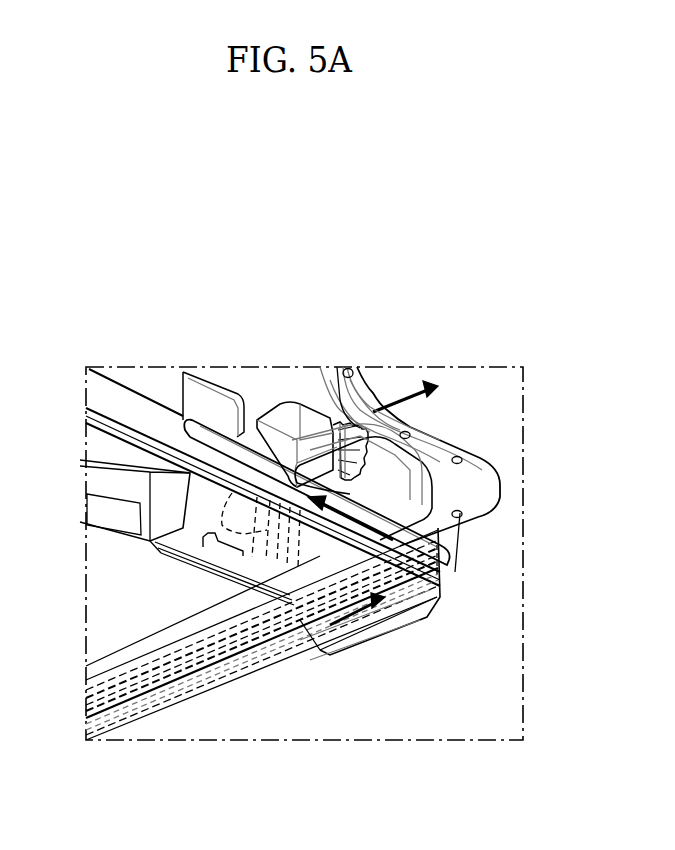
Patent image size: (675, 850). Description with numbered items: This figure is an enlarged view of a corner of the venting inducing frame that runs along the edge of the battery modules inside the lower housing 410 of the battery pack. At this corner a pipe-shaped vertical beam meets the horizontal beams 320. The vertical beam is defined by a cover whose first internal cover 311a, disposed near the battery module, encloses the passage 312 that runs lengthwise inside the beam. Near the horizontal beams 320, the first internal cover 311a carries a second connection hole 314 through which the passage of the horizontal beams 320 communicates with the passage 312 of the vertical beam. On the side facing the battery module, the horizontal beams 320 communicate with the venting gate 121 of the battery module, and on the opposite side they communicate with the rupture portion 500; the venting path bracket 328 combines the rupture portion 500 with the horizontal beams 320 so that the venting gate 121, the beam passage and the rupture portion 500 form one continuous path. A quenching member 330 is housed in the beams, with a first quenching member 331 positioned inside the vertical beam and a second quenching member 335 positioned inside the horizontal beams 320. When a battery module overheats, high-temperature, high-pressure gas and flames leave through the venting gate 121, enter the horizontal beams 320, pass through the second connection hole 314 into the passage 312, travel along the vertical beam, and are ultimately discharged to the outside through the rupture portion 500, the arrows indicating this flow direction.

The venting gate 121 is at (95, 441).
The passage 312 is at (150, 716).
The second connection hole 314 is at (450, 600).
The first internal cover 311a is at (440, 540).
The horizontal beams 320 is at (377, 520).
The venting path bracket 328 is at (263, 428).
The quenching member 330 is at (566, 242).
The first quenching member 331 is at (469, 336).
The second quenching member 335 is at (479, 357).
The lower housing 410 is at (498, 471).
The rupture portion 500 is at (336, 428).